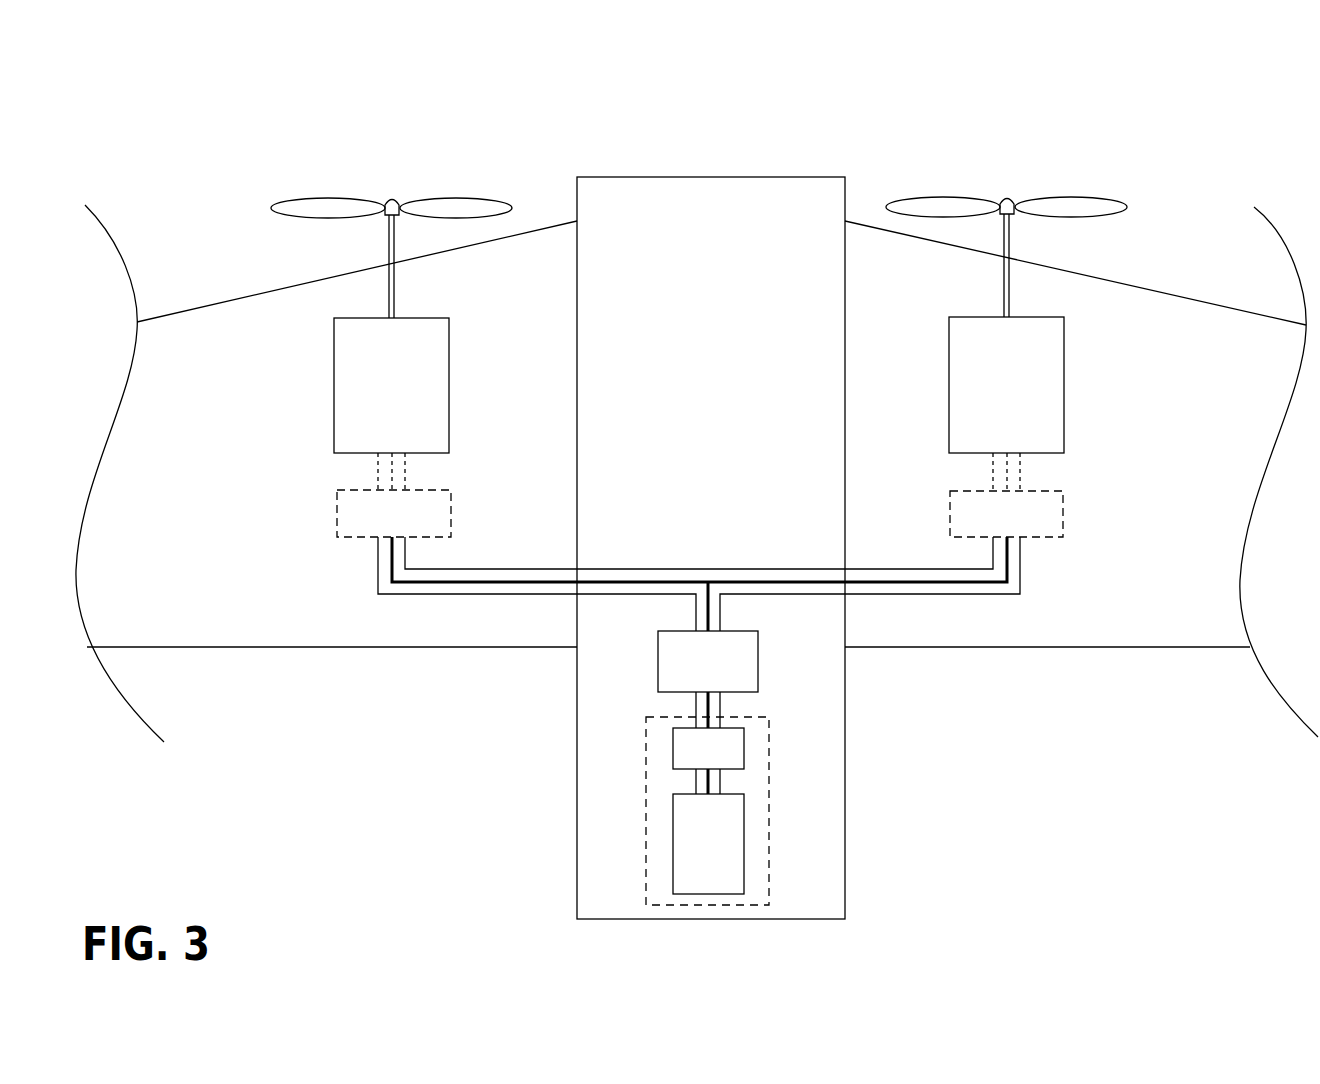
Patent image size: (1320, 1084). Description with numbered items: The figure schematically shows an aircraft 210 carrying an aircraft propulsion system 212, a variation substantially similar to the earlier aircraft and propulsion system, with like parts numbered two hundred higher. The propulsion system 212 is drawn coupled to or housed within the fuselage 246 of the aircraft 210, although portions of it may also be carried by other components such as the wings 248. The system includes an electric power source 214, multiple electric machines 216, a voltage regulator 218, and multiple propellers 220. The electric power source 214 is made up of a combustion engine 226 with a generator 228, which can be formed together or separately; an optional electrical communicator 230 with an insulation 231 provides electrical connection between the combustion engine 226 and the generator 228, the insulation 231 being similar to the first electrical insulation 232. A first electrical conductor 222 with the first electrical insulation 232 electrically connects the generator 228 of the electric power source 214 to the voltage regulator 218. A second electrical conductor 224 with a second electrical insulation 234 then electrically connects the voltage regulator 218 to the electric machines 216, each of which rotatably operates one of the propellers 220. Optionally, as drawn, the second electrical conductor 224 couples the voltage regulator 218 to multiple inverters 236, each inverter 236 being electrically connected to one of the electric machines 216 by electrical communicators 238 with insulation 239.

The aircraft 210 is at (697, 494).
The aircraft propulsion system 212 is at (744, 548).
The electric power source 214 is at (768, 835).
The electric machines 216 is at (449, 400).
The voltage regulator 218 is at (758, 655).
The propellers 220 is at (460, 203).
The first electrical conductor 222 is at (720, 705).
The second electrical conductor 224 is at (720, 605).
The combustion engine 226 is at (672, 847).
The generator 228 is at (744, 747).
The electrical communicator 230 is at (727, 780).
The insulation 231 is at (695, 778).
The first electrical insulation 232 is at (696, 703).
The second electrical insulation 234 is at (696, 611).
The inverters 236 is at (451, 524).
The electrical communicators 238 is at (378, 470).
The insulation 239 is at (407, 470).
The fuselage 246 is at (840, 882).
The wings 248 is at (368, 647).